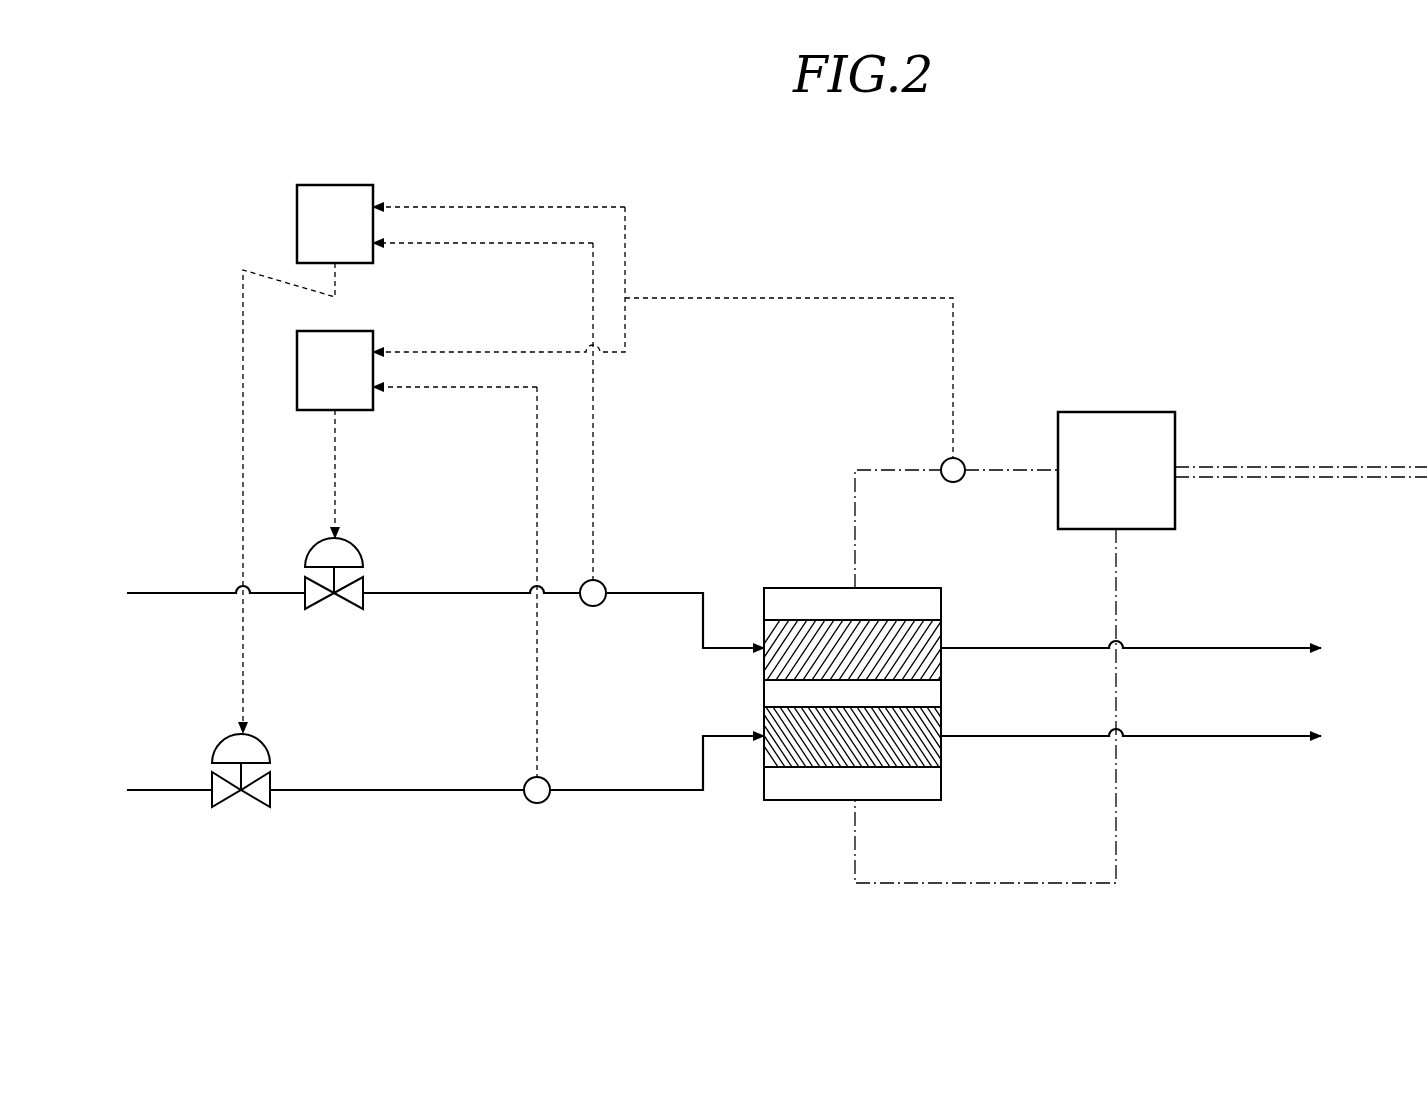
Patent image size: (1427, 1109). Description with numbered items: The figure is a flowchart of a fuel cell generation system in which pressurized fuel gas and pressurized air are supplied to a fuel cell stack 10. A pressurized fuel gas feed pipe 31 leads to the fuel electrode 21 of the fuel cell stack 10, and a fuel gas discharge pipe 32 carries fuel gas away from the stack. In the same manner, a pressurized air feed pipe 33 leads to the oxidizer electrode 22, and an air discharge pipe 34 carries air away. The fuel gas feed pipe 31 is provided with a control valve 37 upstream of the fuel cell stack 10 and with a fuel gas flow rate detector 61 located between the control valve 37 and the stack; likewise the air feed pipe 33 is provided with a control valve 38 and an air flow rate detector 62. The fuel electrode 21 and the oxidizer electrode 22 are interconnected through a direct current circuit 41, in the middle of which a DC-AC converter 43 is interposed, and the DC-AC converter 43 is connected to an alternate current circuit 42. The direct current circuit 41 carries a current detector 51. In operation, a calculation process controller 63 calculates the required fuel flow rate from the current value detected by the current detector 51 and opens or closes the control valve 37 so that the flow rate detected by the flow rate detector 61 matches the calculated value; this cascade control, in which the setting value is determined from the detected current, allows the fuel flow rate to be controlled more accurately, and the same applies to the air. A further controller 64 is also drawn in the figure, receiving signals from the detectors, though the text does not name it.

The fuel cell stack 10 is at (843, 721).
The fuel electrode 21 is at (943, 624).
The oxidizer electrode 22 is at (943, 760).
The fuel gas feed pipe 31 is at (162, 592).
The fuel gas discharge pipe 32 is at (1215, 647).
The air feed pipe 33 is at (162, 789).
The air discharge pipe 34 is at (1230, 740).
The control valve 37 is at (350, 540).
The control valve 38 is at (260, 735).
The direct current circuit 41 is at (853, 545).
The alternate current circuit 42 is at (1305, 466).
The DC-AC converter 43 is at (1120, 412).
The current detector 51 is at (945, 462).
The fuel gas flow rate detector 61 is at (606, 585).
The air flow rate detector 62 is at (548, 781).
The calculation process controller 63 is at (343, 331).
The controller 64 is at (330, 185).